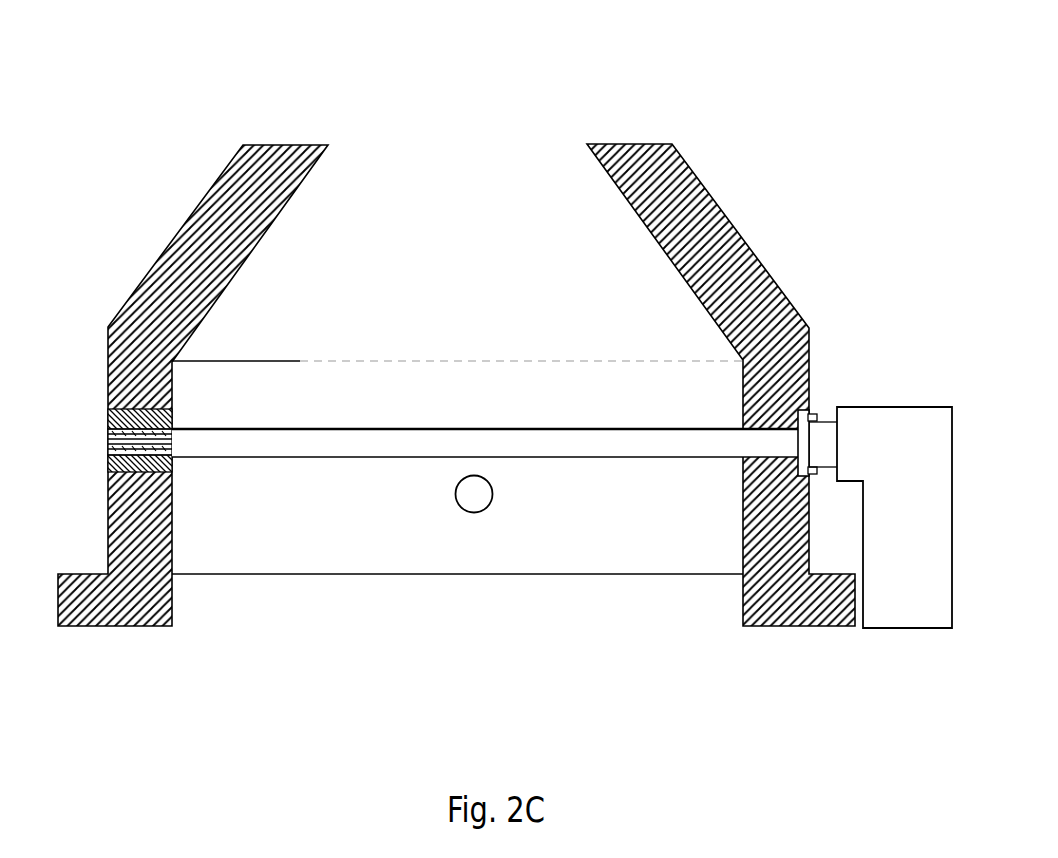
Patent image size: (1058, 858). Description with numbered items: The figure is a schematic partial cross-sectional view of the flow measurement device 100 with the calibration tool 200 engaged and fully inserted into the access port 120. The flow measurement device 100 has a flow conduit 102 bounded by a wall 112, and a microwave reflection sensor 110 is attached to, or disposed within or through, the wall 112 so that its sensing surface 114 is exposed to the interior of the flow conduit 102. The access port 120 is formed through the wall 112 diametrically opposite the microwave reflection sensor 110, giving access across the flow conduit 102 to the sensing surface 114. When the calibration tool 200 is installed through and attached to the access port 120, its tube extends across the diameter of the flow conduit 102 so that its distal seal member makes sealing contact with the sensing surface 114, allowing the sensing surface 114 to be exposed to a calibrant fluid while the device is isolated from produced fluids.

The flow measurement device 100 is at (499, 321).
The flow conduit 102 is at (502, 292).
The microwave reflection sensor 110 is at (178, 474).
The wall 112 is at (130, 292).
The sensing surface 114 is at (174, 421).
The access port 120 is at (742, 468).
The calibration tool 200 is at (900, 394).